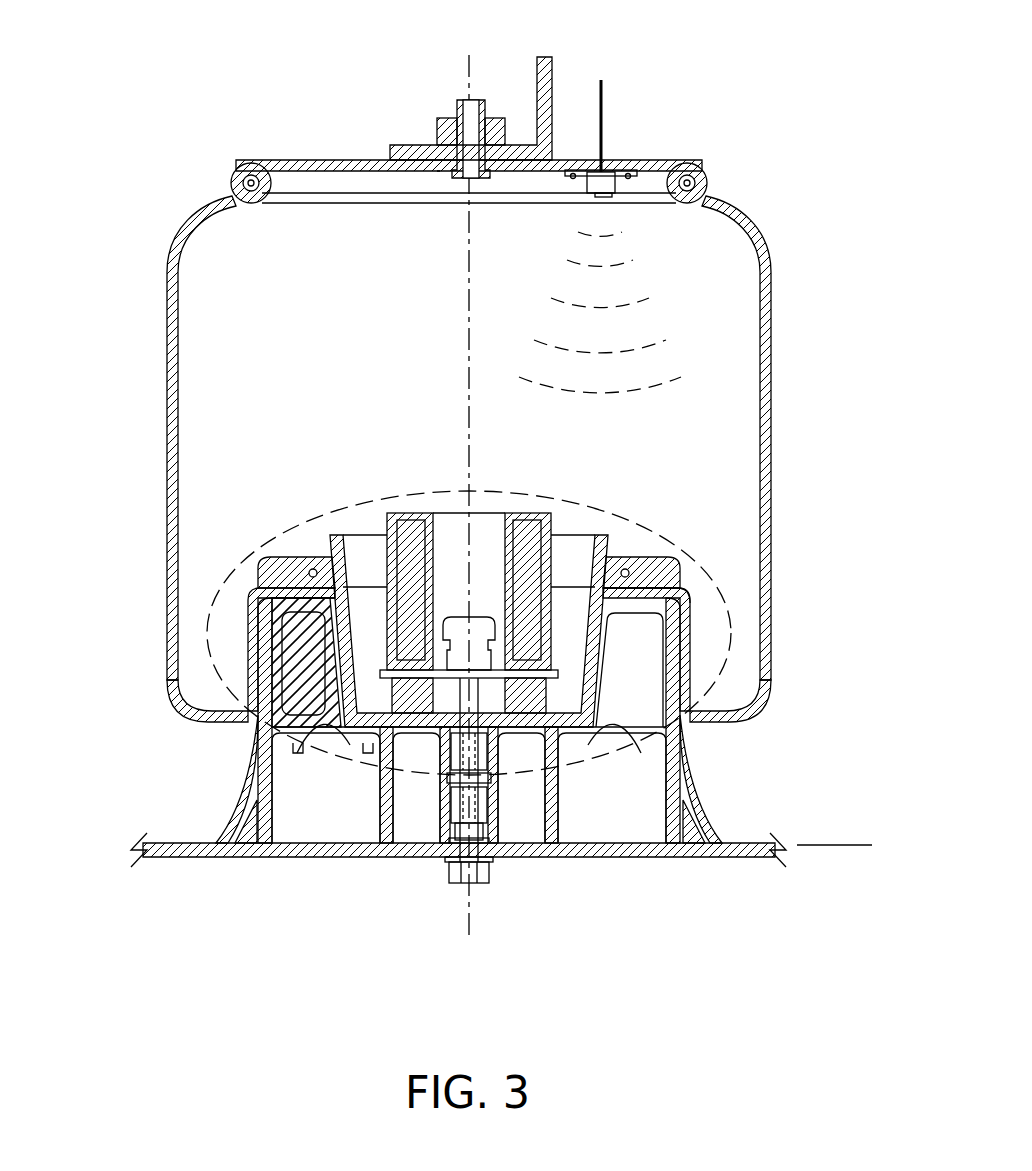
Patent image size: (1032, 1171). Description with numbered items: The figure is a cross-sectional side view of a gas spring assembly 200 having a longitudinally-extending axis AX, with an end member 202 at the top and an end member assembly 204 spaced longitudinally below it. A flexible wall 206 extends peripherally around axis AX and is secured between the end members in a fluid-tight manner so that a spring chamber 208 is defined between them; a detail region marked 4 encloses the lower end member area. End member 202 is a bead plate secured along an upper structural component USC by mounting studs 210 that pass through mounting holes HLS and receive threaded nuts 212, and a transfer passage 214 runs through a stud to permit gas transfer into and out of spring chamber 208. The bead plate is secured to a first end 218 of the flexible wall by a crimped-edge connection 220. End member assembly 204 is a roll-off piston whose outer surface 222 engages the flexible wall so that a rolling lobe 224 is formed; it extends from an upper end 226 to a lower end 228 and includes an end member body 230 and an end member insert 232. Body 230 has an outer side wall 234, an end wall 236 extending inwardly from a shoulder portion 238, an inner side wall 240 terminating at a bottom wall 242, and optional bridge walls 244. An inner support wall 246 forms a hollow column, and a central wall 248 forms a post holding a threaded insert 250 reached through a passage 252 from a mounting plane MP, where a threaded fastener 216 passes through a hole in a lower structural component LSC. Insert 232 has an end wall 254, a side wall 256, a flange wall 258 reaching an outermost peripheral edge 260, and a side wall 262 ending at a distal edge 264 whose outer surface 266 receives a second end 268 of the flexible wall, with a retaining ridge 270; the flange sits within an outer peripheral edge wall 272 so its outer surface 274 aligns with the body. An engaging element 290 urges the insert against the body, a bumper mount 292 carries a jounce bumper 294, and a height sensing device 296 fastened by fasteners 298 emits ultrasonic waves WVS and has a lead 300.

The gas spring assembly 200 is at (805, 208).
The end member 202 is at (303, 158).
The end member assembly 204 is at (727, 793).
The flexible wall 206 is at (775, 430).
The spring chamber 208 is at (205, 272).
The mounting studs 210 is at (455, 105).
The threaded nuts 212 is at (438, 128).
The transfer passage 214 is at (480, 98).
The threaded fastener 216 is at (452, 880).
The first end 218 is at (272, 206).
The crimped-edge connection 220 is at (710, 182).
The outer surface 222 is at (228, 815).
The rolling lobe 224 is at (210, 725).
The upper end 226 is at (700, 600).
The lower end 228 is at (739, 830).
The end member body 230 is at (686, 750).
The end member insert 232 is at (333, 535).
The outer side wall 234 is at (250, 770).
The end wall 236 is at (300, 560).
The shoulder portion 238 is at (258, 597).
The inner side wall 240 is at (262, 684).
The bottom wall 242 is at (412, 733).
The bridge walls 244 is at (265, 640).
The inner support wall 246 is at (386, 810).
The central wall 248 is at (488, 805).
The threaded insert 250 is at (487, 828).
The longitudinally-extending passage 252 is at (490, 840).
The end wall 254 is at (350, 742).
The side wall 256 is at (592, 643).
The flange wall 258 is at (637, 590).
The outermost peripheral edge 260 is at (703, 595).
The side wall 262 is at (352, 545).
The distal edge 264 is at (380, 525).
The outer surface 266 is at (593, 567).
The second end 268 is at (640, 565).
The retaining ridge 270 is at (623, 553).
The outer peripheral edge wall 272 is at (488, 752).
The outer surface 274 is at (492, 778).
The engaging element 290 is at (585, 745).
The bumper mount 292 is at (481, 612).
The jounce bumper 294 is at (428, 511).
The height sensing device 296 is at (625, 190).
The fasteners 298 is at (571, 177).
The lead or connection 300 is at (603, 110).
The detail view circle 4 is at (243, 553).
The longitudinally-extending axis AX is at (469, 290).
The mounting holes HLS is at (437, 173).
The lower structural component LSC is at (185, 857).
The upper structural component USC is at (552, 95).
The mounting plane MP is at (835, 848).
The ultrasonic waves WVS is at (684, 326).